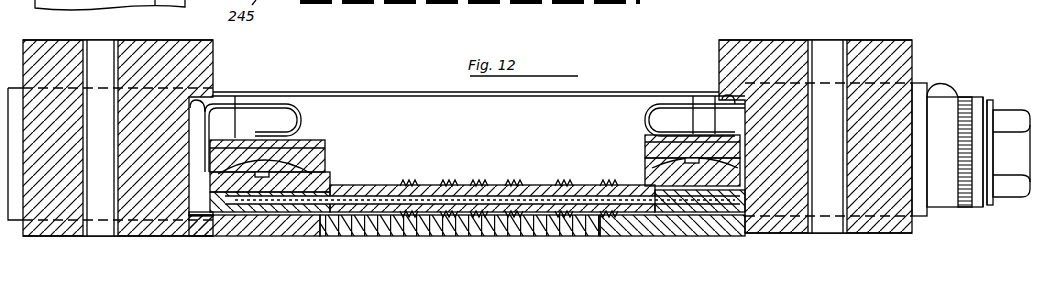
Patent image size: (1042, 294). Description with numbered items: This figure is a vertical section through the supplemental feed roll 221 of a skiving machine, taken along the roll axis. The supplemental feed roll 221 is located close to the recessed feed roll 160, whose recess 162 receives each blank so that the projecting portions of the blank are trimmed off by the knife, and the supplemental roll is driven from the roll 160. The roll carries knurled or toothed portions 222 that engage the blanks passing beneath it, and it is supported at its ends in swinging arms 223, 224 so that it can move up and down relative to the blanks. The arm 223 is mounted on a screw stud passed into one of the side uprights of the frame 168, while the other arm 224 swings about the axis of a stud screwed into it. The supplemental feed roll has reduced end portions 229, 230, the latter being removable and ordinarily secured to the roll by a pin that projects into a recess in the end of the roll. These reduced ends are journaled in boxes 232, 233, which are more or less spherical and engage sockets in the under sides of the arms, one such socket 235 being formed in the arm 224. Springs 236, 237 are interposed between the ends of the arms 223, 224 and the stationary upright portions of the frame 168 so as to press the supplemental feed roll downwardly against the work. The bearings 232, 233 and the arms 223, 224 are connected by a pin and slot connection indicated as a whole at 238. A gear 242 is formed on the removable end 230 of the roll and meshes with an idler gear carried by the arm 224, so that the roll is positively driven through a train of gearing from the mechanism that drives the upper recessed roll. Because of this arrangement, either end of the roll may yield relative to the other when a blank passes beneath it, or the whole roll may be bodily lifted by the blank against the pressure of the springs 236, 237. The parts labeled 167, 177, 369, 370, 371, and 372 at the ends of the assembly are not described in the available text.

The recessed feed roll 160 is at (550, 93).
The recess 162 is at (421, 96).
The flange 167 is at (918, 90).
The frame 168 is at (770, 56).
The hex nut 177 is at (1010, 118).
The supplemental feed roll 221 is at (430, 186).
The knurled or toothed portions 222 is at (515, 186).
The swinging arm 223 is at (645, 140).
The swinging arm 224 is at (330, 184).
The reduced end portion 229 is at (676, 198).
The removable reduced end portion 230 is at (315, 217).
The box 232 is at (648, 182).
The box 233 is at (318, 152).
The socket 235 is at (286, 152).
The spring 236 is at (678, 104).
The spring 237 is at (280, 104).
The pin and slot connection 238 is at (268, 212).
The gear 242 is at (200, 217).
The knurled ring 369 is at (970, 97).
The washer 370 is at (990, 206).
The collar 371 is at (986, 102).
The cylindrical body 372 is at (950, 105).